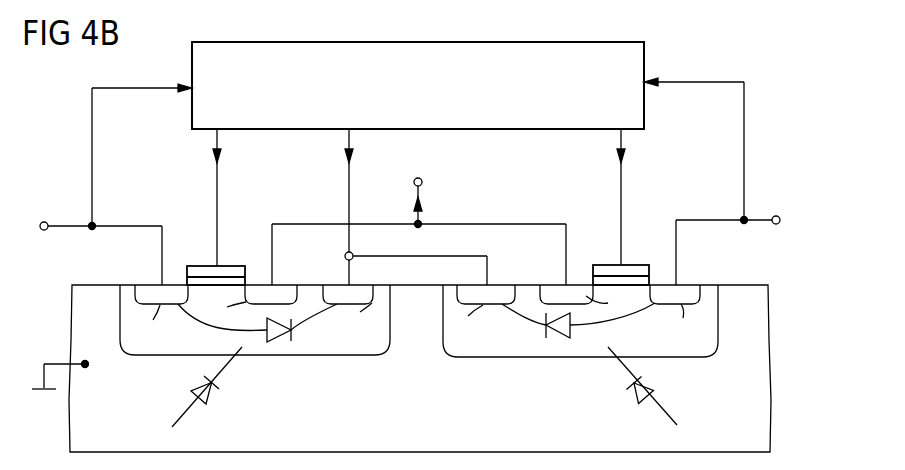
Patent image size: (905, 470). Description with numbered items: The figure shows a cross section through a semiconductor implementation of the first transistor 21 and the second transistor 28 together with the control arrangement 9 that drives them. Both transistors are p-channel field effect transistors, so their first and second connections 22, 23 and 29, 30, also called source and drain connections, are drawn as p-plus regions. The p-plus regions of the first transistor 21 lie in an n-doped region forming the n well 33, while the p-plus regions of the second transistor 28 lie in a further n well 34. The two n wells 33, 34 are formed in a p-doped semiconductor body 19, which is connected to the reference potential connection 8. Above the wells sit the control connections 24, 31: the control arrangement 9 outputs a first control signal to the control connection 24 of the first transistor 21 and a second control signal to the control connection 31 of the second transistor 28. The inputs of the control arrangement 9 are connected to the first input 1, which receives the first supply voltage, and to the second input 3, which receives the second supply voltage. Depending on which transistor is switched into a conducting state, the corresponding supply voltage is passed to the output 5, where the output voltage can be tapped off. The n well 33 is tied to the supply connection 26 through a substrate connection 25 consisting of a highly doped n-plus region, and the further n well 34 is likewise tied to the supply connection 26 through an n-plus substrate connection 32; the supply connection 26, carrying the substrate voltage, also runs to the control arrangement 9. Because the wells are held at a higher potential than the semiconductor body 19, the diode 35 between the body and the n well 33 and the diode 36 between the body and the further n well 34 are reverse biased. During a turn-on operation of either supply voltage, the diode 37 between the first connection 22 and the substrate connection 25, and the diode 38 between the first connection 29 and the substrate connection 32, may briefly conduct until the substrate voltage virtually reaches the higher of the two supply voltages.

The first input 1 is at (43, 222).
The second input 3 is at (778, 217).
The output 5 is at (424, 183).
The reference potential connection 8 is at (40, 387).
The control arrangement 9 is at (648, 60).
The semiconductor body 19 is at (770, 345).
The first transistor 21 is at (229, 207).
The first connection of the first transistor 22 is at (161, 249).
The second connection of the first transistor 23 is at (271, 231).
The control connection of the first transistor 24 is at (213, 262).
The substrate connection of the first transistor 25 is at (345, 274).
The supply connection 26 is at (345, 255).
The second transistor 28 is at (603, 213).
The first connection of the second transistor 29 is at (678, 245).
The second connection of the second transistor 30 is at (506, 222).
The control connection of the second transistor 31 is at (624, 258).
The substrate connection of the second transistor 32 is at (490, 275).
The n well 33 is at (303, 351).
The further n well 34 is at (533, 350).
The diode 35 is at (230, 375).
The diode 36 is at (626, 378).
The diode 37 is at (298, 324).
The diode 38 is at (542, 326).